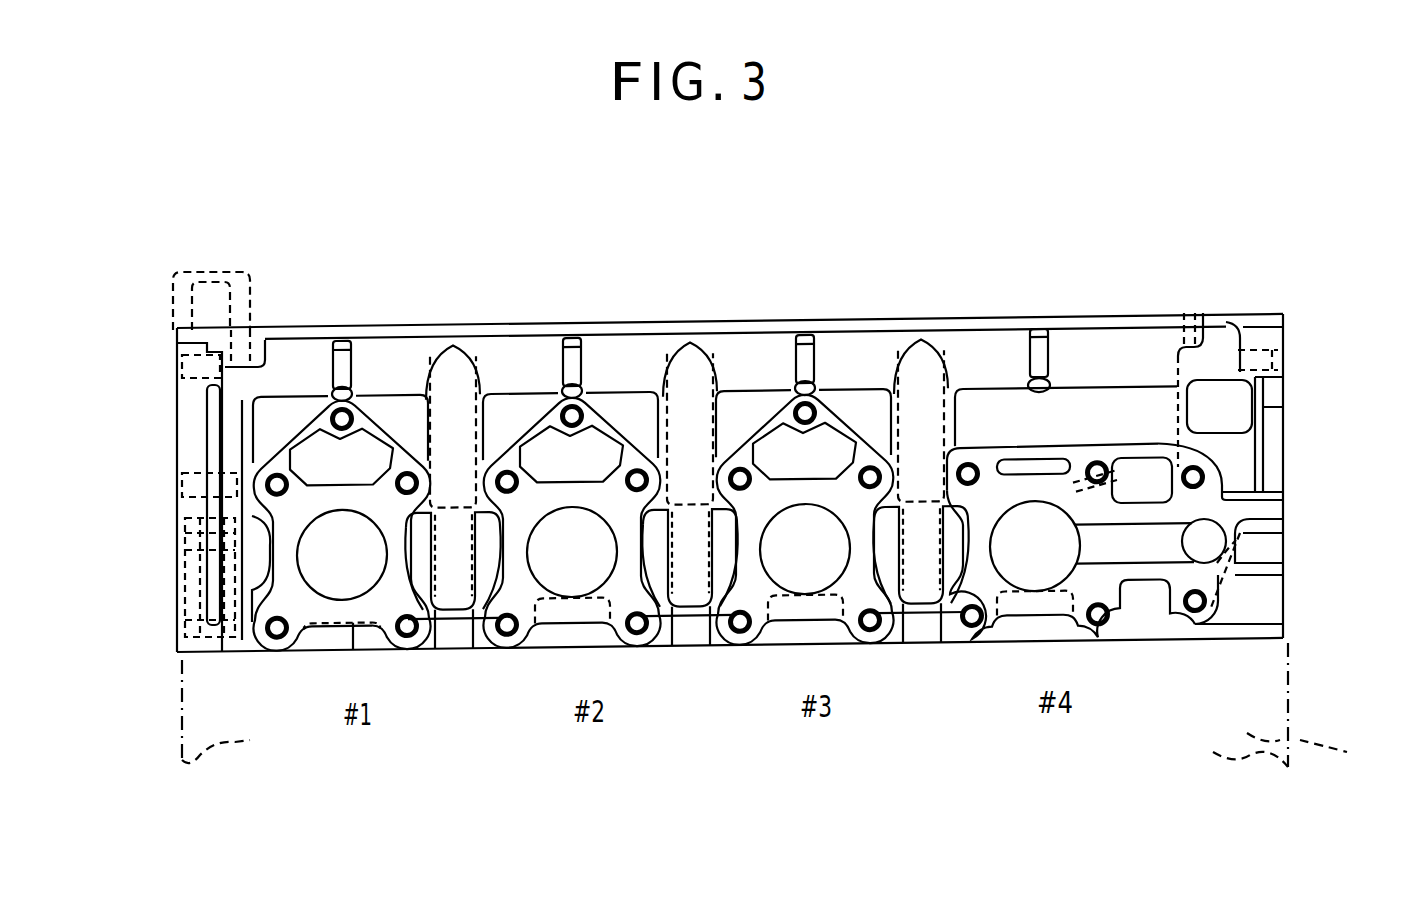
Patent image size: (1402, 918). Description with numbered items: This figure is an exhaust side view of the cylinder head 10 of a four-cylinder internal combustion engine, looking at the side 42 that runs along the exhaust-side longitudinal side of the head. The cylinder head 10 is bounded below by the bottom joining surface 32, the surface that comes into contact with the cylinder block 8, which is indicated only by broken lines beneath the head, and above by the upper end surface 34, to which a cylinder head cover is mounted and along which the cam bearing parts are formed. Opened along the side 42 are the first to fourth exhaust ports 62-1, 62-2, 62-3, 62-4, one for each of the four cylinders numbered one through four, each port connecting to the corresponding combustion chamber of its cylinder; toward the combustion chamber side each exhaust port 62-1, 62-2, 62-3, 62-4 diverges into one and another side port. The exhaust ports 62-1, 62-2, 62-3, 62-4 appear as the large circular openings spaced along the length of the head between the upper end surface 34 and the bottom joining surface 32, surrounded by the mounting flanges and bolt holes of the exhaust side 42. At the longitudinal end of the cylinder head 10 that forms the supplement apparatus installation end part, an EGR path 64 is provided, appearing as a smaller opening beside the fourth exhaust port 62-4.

The cylinder block 8 is at (780, 705).
The cylinder head 10 is at (1207, 240).
The bottom joining surface 32 is at (1172, 640).
The upper end surface 34 is at (1075, 314).
The side 42 is at (237, 632).
The first exhaust port 62-1 is at (325, 575).
The second exhaust port 62-2 is at (567, 580).
The third exhaust port 62-3 is at (792, 573).
The fourth exhaust port 62-4 is at (1008, 560).
The EGR path 64 is at (1209, 545).